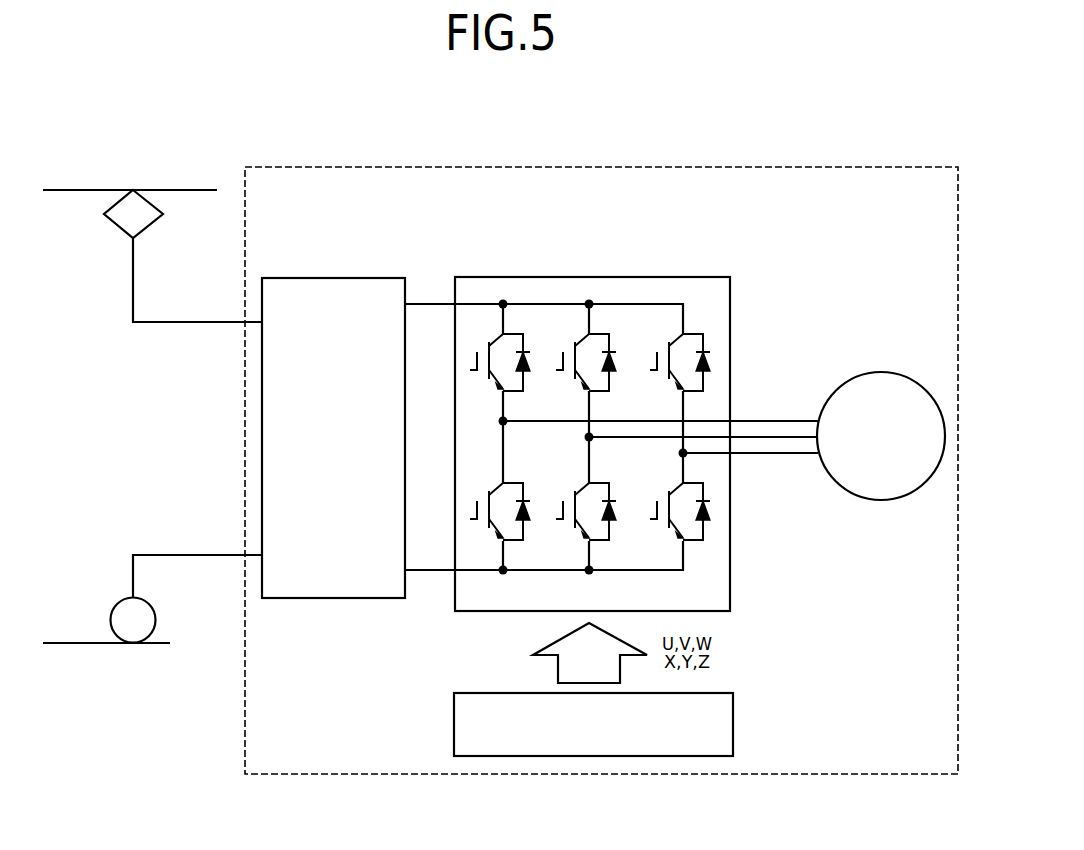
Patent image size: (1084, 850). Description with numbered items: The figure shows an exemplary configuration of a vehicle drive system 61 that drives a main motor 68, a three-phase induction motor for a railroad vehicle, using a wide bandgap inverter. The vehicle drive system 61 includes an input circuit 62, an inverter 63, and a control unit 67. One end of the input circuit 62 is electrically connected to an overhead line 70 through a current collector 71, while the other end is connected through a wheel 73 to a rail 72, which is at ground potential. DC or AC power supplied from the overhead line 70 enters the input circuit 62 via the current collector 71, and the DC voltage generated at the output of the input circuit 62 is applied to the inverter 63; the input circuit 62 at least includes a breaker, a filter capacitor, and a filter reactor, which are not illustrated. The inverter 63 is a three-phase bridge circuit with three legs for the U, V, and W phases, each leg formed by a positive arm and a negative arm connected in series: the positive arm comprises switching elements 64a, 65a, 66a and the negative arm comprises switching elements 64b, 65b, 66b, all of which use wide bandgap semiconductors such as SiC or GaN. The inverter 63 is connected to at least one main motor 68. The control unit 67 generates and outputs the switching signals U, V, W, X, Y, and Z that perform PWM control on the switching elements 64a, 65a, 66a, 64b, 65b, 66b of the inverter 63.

The vehicle drive system 61 is at (797, 165).
The input circuit 62 is at (336, 277).
The inverter 63 is at (489, 277).
The switching element 64a is at (525, 342).
The switching element 65a is at (613, 342).
The switching element 66a is at (705, 342).
The switching element 64b is at (527, 495).
The switching element 65b is at (613, 495).
The switching element 66b is at (705, 493).
The control unit 67 is at (733, 722).
The main motor 68 is at (882, 487).
The overhead line 70 is at (63, 189).
The current collector 71 is at (118, 228).
The rail 72 is at (107, 645).
The wheel 73 is at (115, 601).